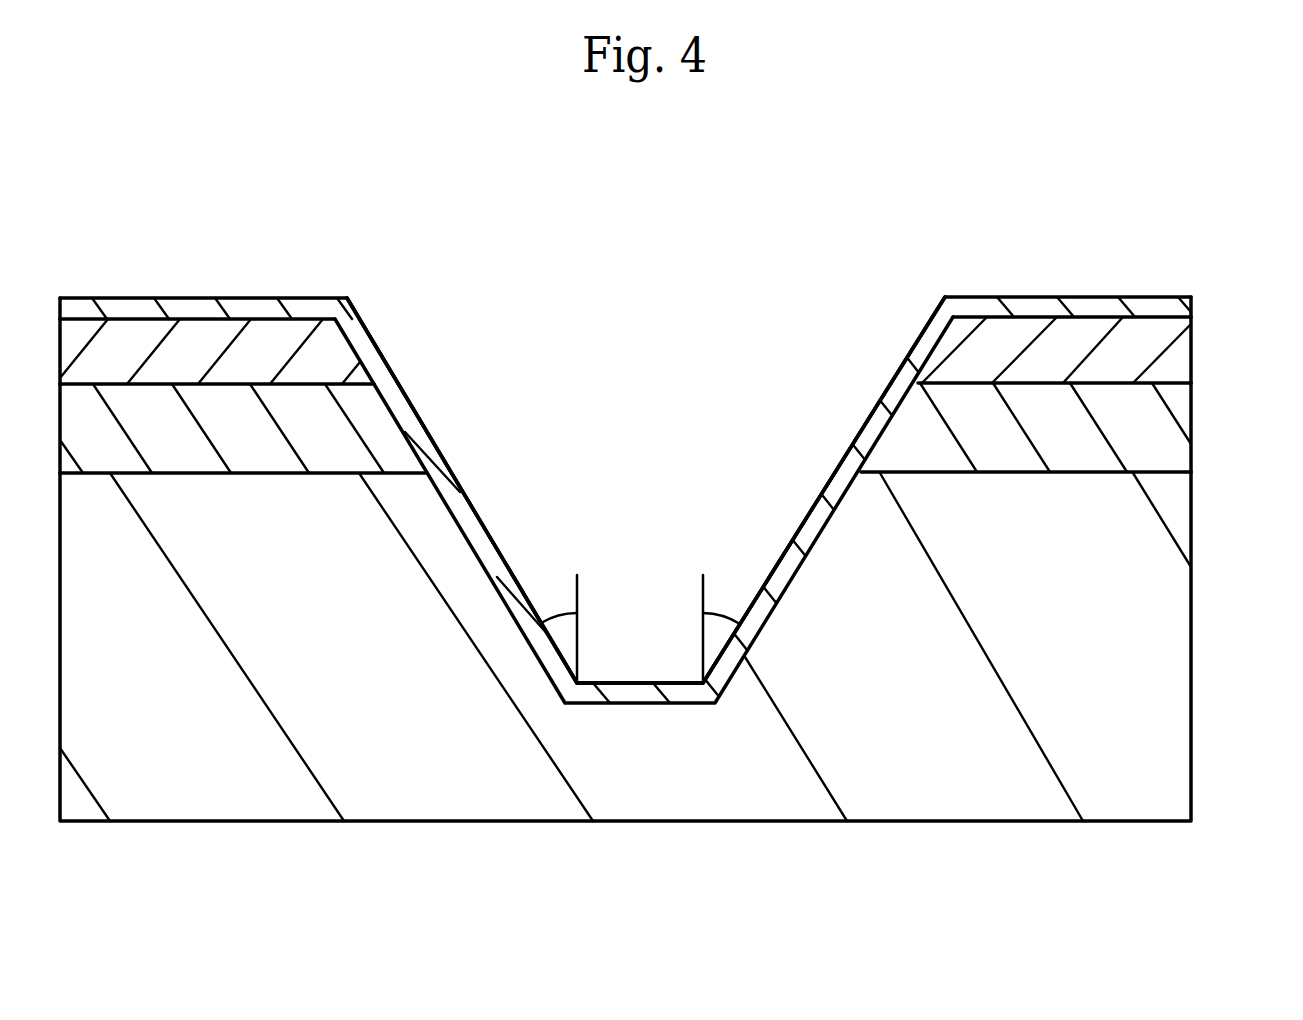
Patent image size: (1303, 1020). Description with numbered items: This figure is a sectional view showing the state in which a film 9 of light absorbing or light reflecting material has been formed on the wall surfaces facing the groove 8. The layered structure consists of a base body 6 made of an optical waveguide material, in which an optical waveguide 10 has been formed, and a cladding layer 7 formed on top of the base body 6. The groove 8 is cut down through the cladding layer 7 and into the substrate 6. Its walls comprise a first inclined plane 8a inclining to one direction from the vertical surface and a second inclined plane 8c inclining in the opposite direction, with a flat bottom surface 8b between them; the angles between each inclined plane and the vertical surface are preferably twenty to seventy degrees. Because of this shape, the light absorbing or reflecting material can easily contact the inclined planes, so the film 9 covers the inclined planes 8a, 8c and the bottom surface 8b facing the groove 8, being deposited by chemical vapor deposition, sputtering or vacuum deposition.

The base body 6 is at (1175, 503).
The cladding layer 7 is at (1175, 352).
The groove 8 is at (668, 445).
The first inclined plane 8a is at (457, 517).
The flat bottom surface 8b is at (623, 695).
The second inclined plane 8c is at (813, 508).
The film 9 is at (398, 413).
The optical waveguide 10 is at (1163, 422).